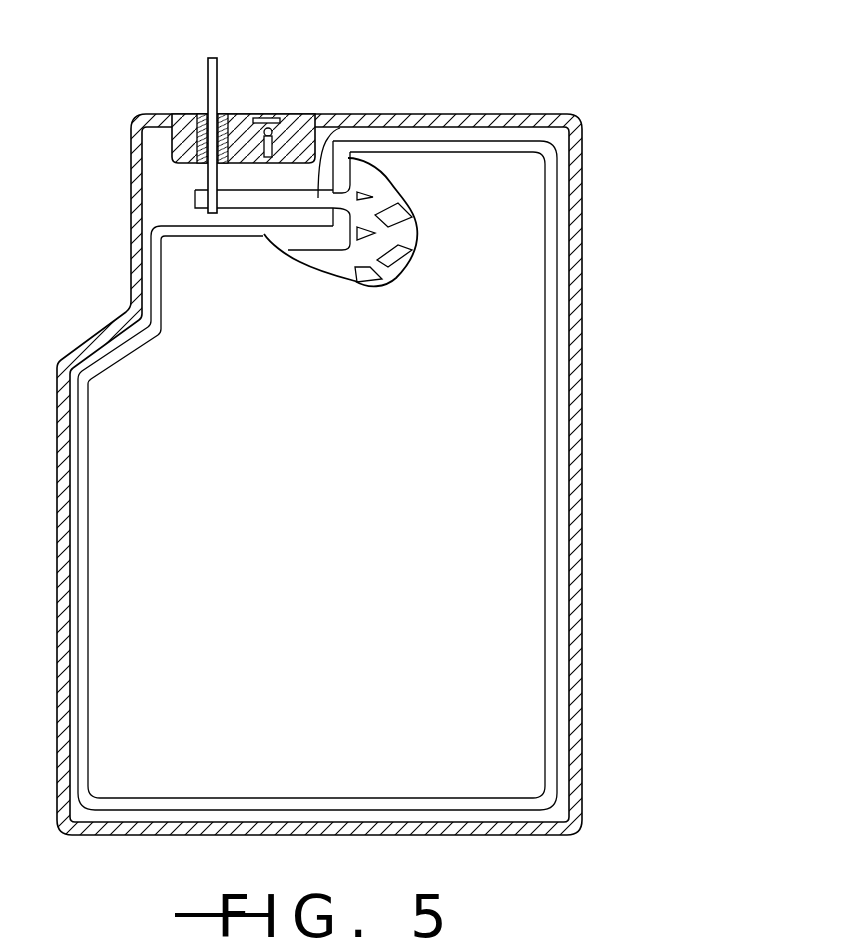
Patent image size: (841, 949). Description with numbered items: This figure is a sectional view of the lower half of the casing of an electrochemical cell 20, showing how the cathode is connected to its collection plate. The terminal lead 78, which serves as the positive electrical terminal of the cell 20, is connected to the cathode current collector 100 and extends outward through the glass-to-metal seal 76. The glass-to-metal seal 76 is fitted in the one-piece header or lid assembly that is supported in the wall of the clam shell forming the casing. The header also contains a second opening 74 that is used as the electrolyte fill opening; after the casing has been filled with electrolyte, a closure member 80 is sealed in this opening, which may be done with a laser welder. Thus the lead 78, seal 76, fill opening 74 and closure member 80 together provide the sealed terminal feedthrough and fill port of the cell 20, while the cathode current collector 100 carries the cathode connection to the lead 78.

The electrochemical cell 20 is at (700, 302).
The second opening 74 is at (275, 158).
The glass-to-metal seal 76 is at (223, 123).
The terminal lead 78 is at (210, 58).
The closure member 80 is at (268, 128).
The cathode current collector 100 is at (338, 130).